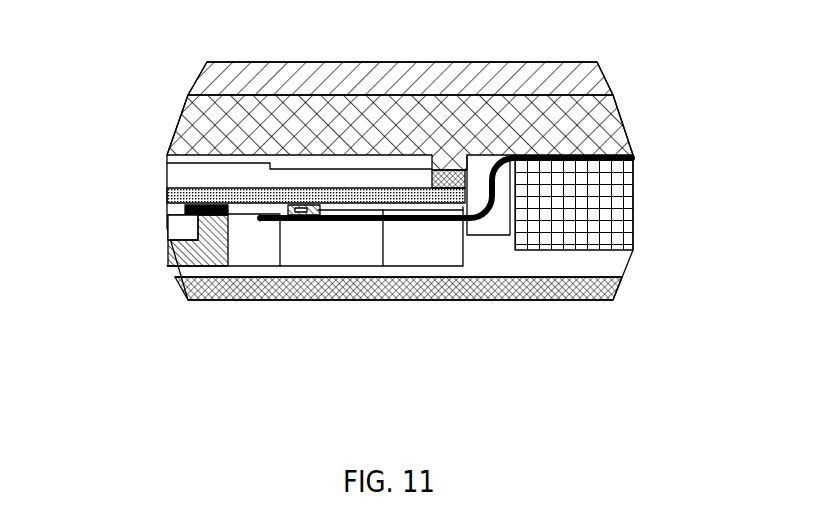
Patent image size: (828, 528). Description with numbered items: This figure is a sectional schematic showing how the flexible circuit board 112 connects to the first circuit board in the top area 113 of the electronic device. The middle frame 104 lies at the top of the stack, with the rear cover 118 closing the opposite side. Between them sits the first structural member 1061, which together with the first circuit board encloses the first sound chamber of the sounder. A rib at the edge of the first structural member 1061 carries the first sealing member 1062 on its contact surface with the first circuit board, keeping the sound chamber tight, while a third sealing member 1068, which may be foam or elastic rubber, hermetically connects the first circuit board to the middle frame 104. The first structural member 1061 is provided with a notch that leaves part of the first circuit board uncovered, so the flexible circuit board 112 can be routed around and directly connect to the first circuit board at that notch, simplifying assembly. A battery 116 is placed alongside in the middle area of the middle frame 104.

The top area 113 is at (298, 78).
The middle frame 104 is at (580, 67).
The third sealing member 1068 is at (432, 168).
The first sealing member 1062 is at (167, 205).
The first structural member 1061 is at (208, 262).
The flexible circuit board 112 is at (413, 222).
The battery 116 is at (615, 235).
The rear cover 118 is at (380, 293).